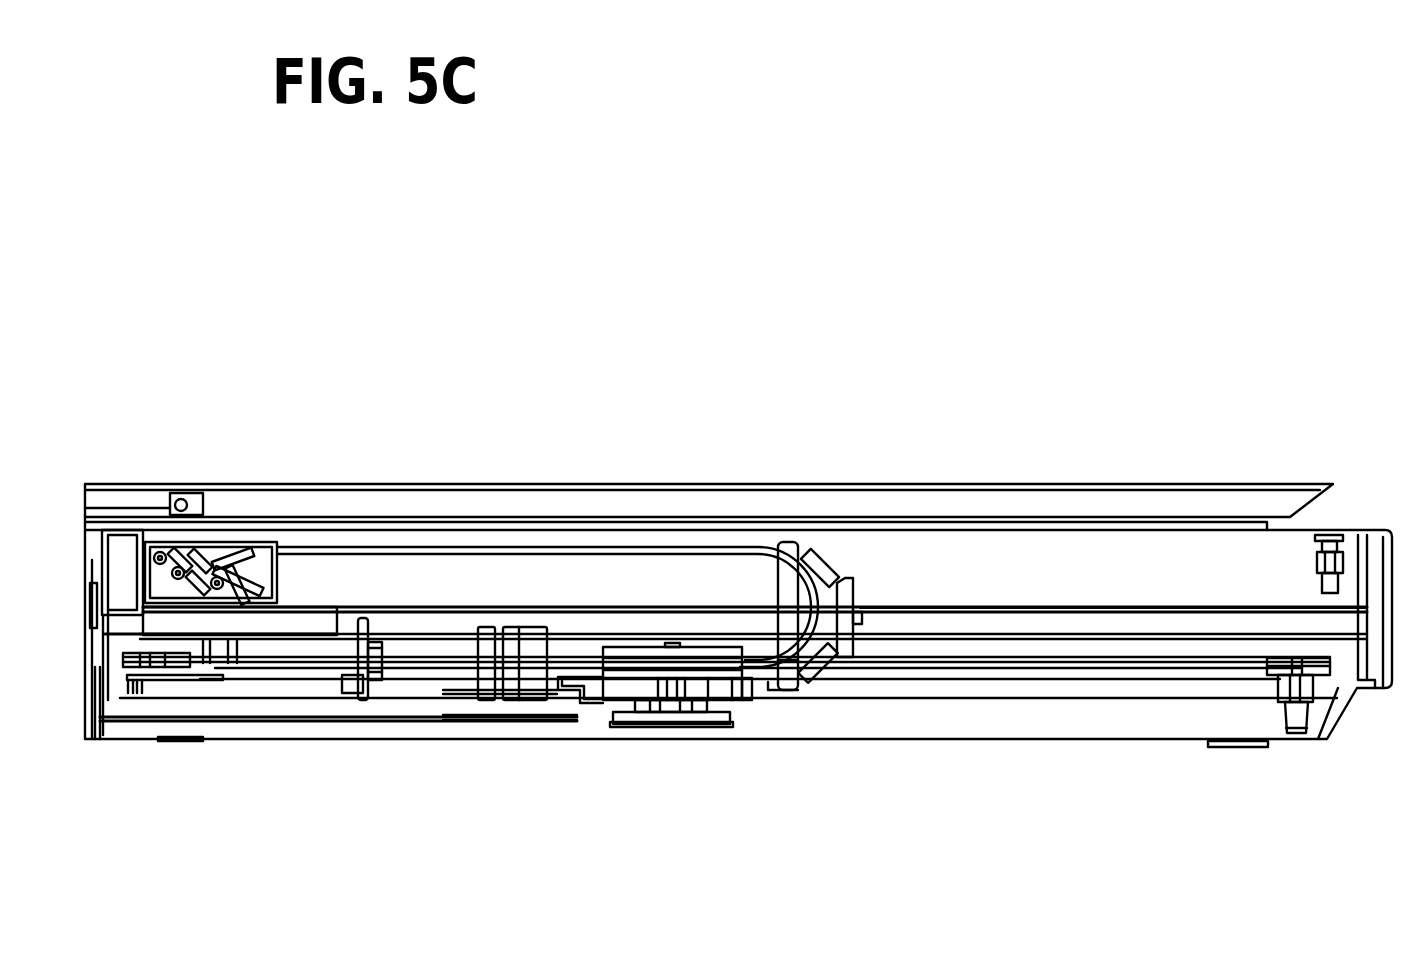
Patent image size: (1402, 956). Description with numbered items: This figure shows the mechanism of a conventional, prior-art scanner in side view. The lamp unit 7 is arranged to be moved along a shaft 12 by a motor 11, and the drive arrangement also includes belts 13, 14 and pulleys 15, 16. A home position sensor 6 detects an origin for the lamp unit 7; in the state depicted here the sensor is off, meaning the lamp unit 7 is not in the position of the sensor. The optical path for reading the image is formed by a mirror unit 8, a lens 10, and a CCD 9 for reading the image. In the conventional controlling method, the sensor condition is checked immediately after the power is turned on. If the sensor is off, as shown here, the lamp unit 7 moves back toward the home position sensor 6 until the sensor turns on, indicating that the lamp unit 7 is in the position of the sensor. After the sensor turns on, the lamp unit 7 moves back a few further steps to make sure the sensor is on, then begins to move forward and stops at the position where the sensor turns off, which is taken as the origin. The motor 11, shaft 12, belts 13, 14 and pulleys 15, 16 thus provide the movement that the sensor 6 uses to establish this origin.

The home position sensor 6 is at (1347, 568).
The lamp unit 7 is at (155, 545).
The mirror unit 8 is at (842, 577).
The CCD 9 is at (365, 697).
The lens 10 is at (525, 682).
The motor 11 is at (615, 705).
The shaft 12 is at (1073, 613).
The belt 13 is at (932, 670).
The belt 14 is at (1037, 697).
The pulley 15 is at (1282, 690).
The pulley 16 is at (153, 680).